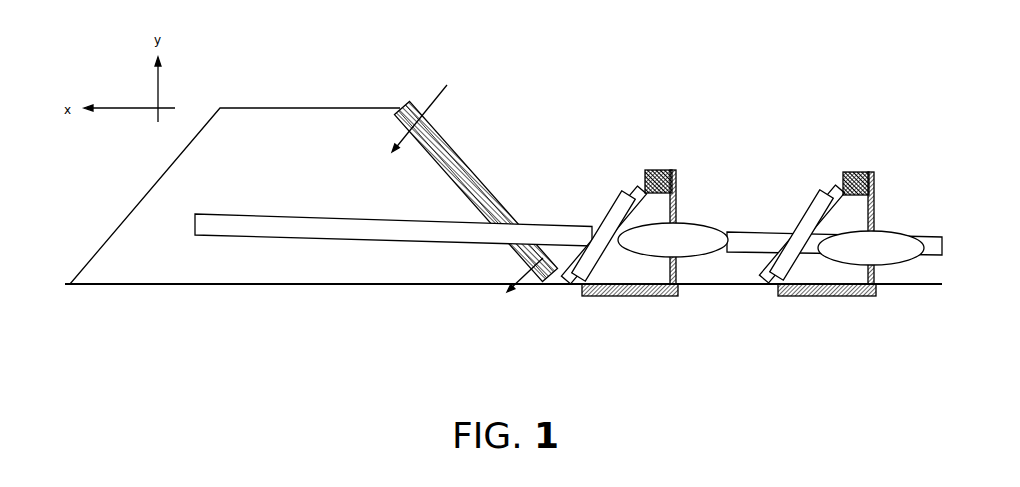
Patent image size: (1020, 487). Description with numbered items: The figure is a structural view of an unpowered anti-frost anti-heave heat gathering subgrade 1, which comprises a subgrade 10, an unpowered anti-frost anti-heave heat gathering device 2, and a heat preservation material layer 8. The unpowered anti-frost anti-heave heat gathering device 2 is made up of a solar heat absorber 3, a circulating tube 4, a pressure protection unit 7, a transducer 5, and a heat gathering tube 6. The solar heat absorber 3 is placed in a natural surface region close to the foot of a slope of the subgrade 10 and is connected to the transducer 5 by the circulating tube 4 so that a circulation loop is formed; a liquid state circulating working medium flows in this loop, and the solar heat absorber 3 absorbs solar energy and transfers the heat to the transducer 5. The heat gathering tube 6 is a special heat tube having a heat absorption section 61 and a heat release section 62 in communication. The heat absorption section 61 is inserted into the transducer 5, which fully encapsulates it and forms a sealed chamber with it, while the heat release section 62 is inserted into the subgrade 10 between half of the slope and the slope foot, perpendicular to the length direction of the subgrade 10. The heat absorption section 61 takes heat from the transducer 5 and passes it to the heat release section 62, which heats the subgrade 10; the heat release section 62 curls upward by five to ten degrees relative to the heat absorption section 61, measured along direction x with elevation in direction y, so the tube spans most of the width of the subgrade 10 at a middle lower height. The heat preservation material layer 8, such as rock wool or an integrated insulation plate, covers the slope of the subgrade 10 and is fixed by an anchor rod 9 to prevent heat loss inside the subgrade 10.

The unpowered anti-frost anti-heave heat gathering subgrade 1 is at (509, 36).
The subgrade 10 is at (175, 248).
The unpowered anti-frost anti-heave heat gathering device 2 is at (615, 174).
The solar heat absorber 3 is at (585, 273).
The circulating tube 4 is at (677, 210).
The transducer 5 is at (716, 237).
The heat gathering tube 6 is at (568, 284).
The heat absorption section 61 is at (748, 242).
The heat release section 62 is at (338, 225).
The pressure protection unit 7 is at (660, 170).
The heat preservation material layer 8 is at (462, 160).
The anchor rod 9 is at (420, 106).